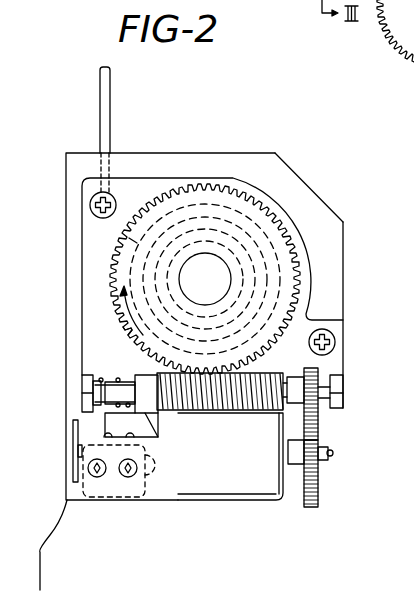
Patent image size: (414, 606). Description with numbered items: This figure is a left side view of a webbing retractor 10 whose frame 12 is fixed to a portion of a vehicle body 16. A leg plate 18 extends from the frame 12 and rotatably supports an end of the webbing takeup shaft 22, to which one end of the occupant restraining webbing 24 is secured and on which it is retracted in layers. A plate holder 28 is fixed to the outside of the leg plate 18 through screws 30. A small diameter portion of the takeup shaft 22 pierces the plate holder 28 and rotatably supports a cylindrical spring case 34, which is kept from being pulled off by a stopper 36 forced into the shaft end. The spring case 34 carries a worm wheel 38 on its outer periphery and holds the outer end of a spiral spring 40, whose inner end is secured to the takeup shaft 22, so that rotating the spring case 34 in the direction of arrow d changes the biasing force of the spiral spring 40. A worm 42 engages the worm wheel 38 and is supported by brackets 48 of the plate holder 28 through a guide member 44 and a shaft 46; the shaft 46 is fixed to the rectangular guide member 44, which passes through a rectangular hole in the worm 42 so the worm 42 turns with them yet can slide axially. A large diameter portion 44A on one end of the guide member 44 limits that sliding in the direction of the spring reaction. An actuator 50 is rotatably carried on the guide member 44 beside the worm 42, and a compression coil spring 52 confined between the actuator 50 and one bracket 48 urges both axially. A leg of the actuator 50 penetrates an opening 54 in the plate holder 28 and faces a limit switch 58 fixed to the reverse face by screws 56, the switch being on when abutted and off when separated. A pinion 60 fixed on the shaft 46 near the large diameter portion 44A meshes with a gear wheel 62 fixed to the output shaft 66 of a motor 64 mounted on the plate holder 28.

The webbing retractor 10 is at (300, 166).
The frame 12 is at (67, 503).
The vehicle body 16 is at (48, 525).
The leg plate 18 is at (305, 197).
The webbing takeup shaft 22 is at (247, 197).
The occupant restraining webbing 24 is at (100, 108).
The plate holder 28 is at (87, 370).
The screws 30 is at (90, 205).
The spring case 34 is at (133, 332).
The stopper 36 is at (222, 273).
The worm wheel 38 is at (178, 183).
The spiral spring 40 is at (222, 195).
The worm 42 is at (213, 412).
The guide member 44 is at (108, 407).
The large diameter portion 44A is at (293, 406).
The shaft 46 is at (322, 404).
The brackets 48 is at (87, 397).
The actuator 50 is at (147, 382).
The compression coil spring 52 is at (92, 378).
The opening 54 is at (103, 437).
The screws 56 is at (129, 478).
The limit switch 58 is at (112, 500).
The pinion 60 is at (318, 412).
The gear wheel 62 is at (315, 507).
The motor 64 is at (227, 485).
The output shaft 66 is at (330, 457).